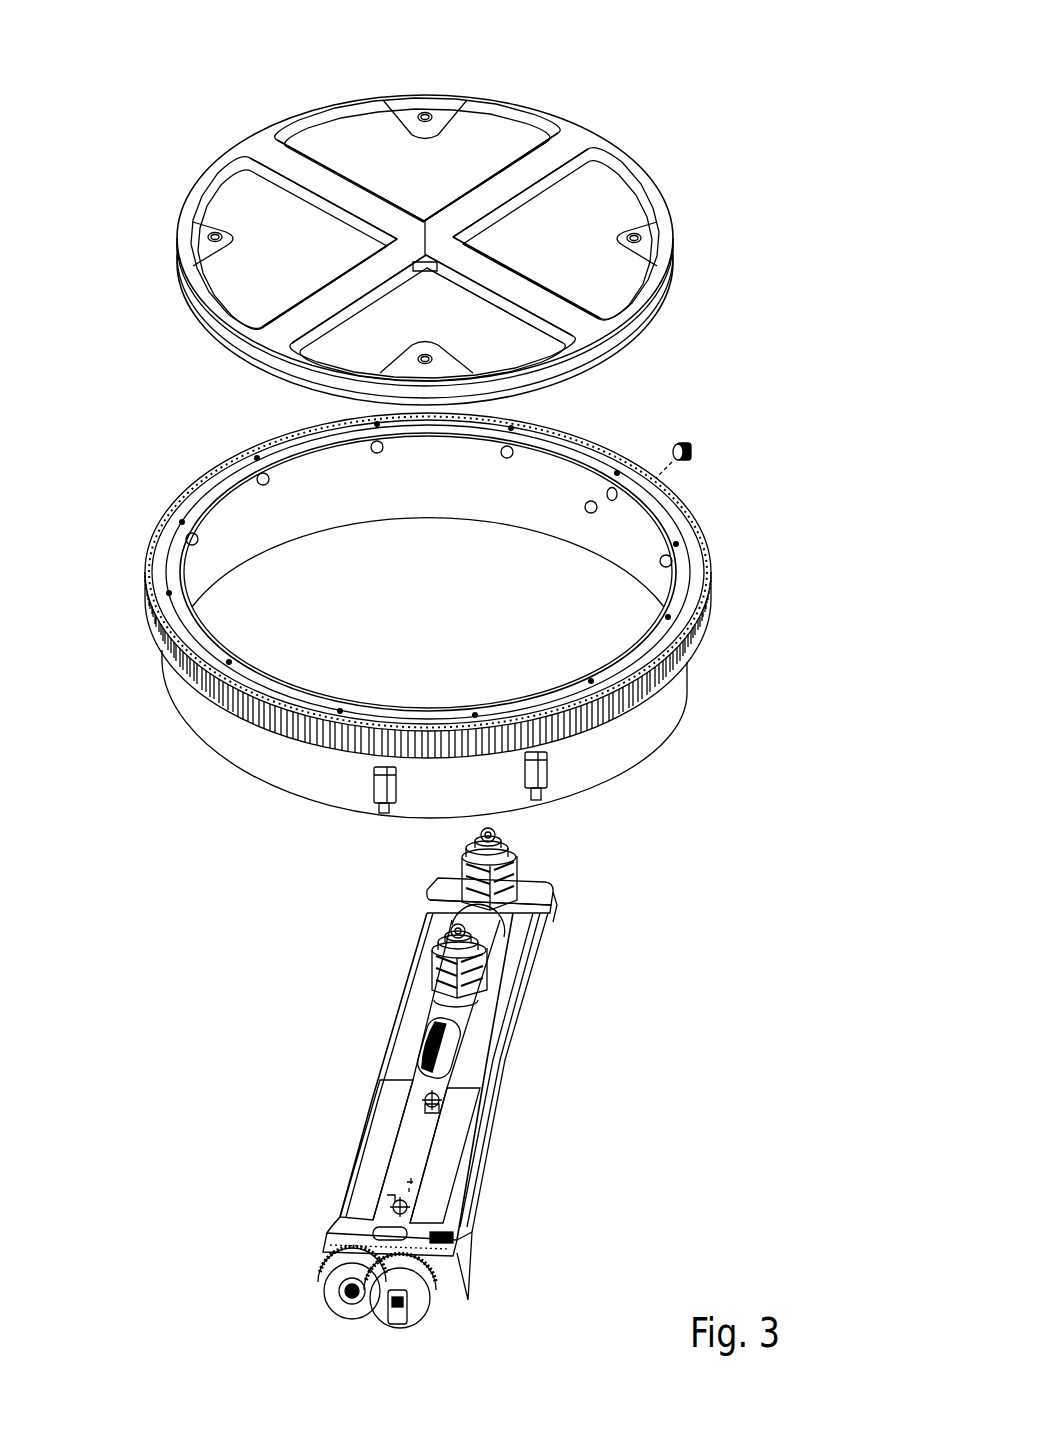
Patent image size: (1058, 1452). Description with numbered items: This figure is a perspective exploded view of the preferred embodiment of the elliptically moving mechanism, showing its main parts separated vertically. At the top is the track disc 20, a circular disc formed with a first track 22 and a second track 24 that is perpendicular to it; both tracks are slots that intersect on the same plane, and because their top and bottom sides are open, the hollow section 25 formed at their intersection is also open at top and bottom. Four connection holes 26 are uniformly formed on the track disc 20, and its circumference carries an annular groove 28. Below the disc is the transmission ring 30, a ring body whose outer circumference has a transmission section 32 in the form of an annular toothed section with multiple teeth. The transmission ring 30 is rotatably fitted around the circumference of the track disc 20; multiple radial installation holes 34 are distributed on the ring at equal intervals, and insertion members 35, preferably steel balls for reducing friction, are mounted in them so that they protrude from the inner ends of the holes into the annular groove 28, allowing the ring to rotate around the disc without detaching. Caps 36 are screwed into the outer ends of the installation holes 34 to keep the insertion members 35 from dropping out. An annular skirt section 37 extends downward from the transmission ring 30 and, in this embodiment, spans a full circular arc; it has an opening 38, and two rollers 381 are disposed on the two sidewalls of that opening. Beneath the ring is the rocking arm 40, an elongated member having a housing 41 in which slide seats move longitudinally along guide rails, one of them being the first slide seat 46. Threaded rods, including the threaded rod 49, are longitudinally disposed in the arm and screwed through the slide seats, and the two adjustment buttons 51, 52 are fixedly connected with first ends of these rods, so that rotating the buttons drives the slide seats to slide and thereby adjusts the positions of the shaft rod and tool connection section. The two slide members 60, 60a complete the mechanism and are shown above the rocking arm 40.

The track disc 20 is at (431, 211).
The first track 22 is at (545, 172).
The second track 24 is at (556, 310).
The hollow section 25 is at (432, 256).
The connection holes 26 is at (641, 236).
The annular groove 28 is at (233, 340).
The transmission ring 30 is at (477, 634).
The transmission section 32 is at (708, 610).
The installation holes 34 is at (611, 501).
The insertion members 35 is at (590, 513).
The caps 36 is at (690, 445).
The skirt section 37 is at (228, 742).
The opening 38 is at (549, 800).
The rollers 381 is at (385, 798).
The rocking arm 40 is at (430, 1088).
The housing 41 is at (405, 1025).
The first slide seat 46 is at (454, 1037).
The threaded rod 49 is at (421, 1079).
The adjustment button 51 is at (417, 1310).
The adjustment button 52 is at (336, 1285).
The slide member 60 is at (546, 857).
The slide member 60a is at (494, 988).